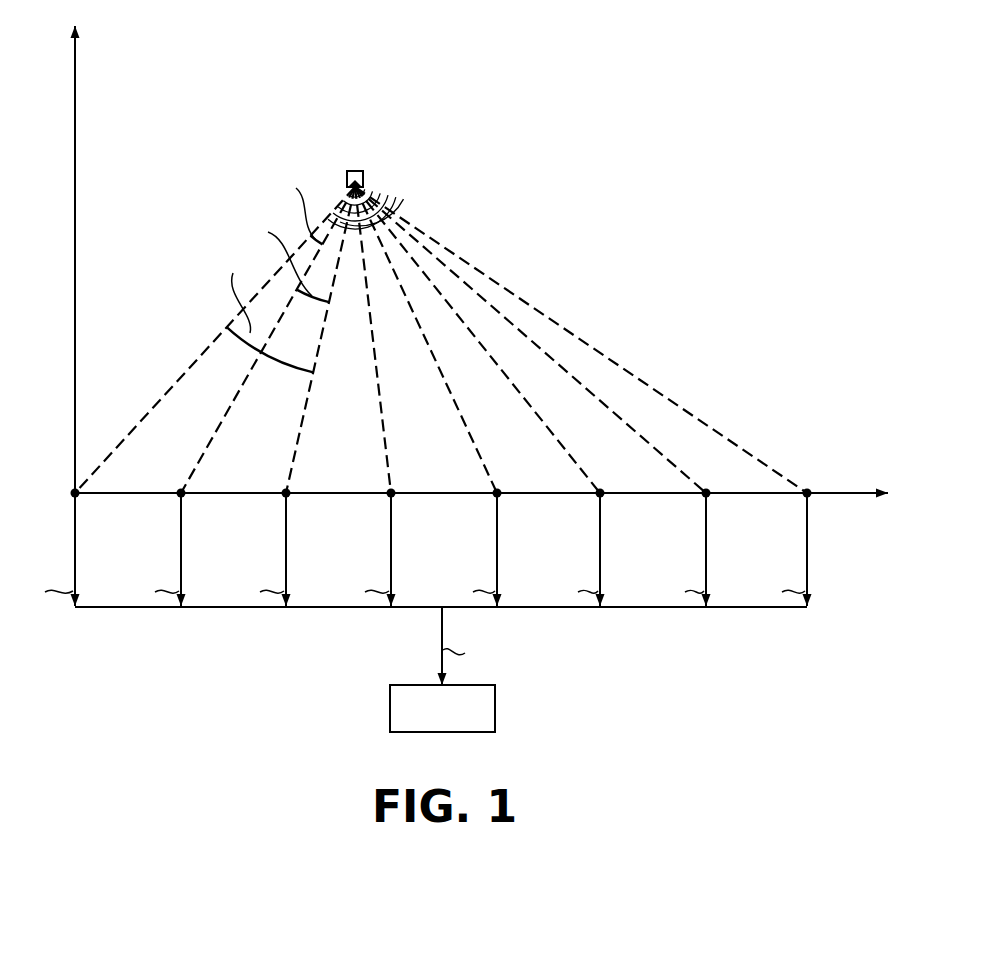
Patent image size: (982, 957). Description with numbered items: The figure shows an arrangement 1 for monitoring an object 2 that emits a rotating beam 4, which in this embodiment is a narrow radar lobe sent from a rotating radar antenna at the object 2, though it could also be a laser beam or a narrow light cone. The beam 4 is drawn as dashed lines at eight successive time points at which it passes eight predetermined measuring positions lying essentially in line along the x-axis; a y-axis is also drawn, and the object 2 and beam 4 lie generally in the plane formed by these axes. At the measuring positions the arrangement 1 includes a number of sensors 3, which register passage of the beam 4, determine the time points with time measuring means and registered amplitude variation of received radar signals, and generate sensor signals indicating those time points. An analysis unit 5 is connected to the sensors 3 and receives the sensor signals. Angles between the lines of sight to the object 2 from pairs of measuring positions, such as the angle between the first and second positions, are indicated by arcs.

The arrangement 1 is at (225, 752).
The object 2 is at (356, 170).
The sensors 3 is at (441, 329).
The rotating beam 4 is at (400, 212).
The analysis unit 5 is at (495, 705).